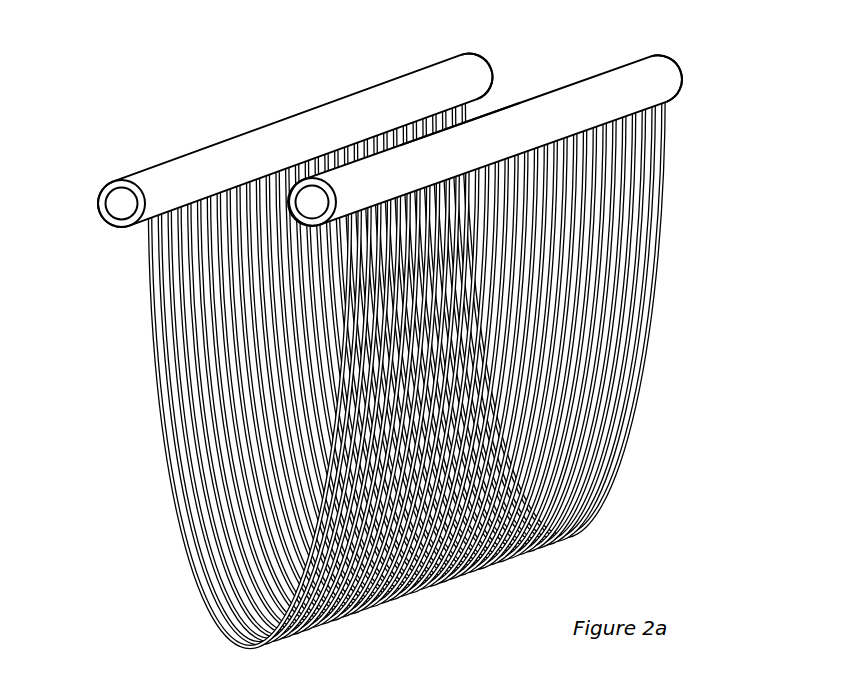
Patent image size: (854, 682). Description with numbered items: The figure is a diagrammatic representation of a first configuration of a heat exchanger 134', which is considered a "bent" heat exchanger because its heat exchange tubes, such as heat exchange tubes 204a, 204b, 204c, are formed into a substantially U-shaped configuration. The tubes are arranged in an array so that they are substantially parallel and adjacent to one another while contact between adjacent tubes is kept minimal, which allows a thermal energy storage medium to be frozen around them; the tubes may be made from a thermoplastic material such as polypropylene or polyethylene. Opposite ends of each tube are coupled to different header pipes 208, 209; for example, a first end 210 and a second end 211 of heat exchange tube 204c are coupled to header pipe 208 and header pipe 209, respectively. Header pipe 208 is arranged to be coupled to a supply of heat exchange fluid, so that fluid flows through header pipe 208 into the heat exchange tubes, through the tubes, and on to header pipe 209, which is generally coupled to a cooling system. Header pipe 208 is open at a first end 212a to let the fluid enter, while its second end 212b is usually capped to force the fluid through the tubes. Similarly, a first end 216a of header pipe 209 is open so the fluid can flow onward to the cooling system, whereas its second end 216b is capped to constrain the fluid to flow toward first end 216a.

The heat exchanger 134' is at (400, 333).
The heat exchange tube 204a is at (157, 394).
The heat exchange tube 204b is at (333, 620).
The heat exchange tube 204c is at (621, 412).
The header pipe 208 is at (380, 77).
The header pipe 209 is at (612, 72).
The first end 210 is at (471, 108).
The second end 211 is at (666, 106).
The first end 212a is at (123, 203).
The second end 212b is at (483, 55).
The first end 216a is at (327, 157).
The second end 216b is at (683, 70).